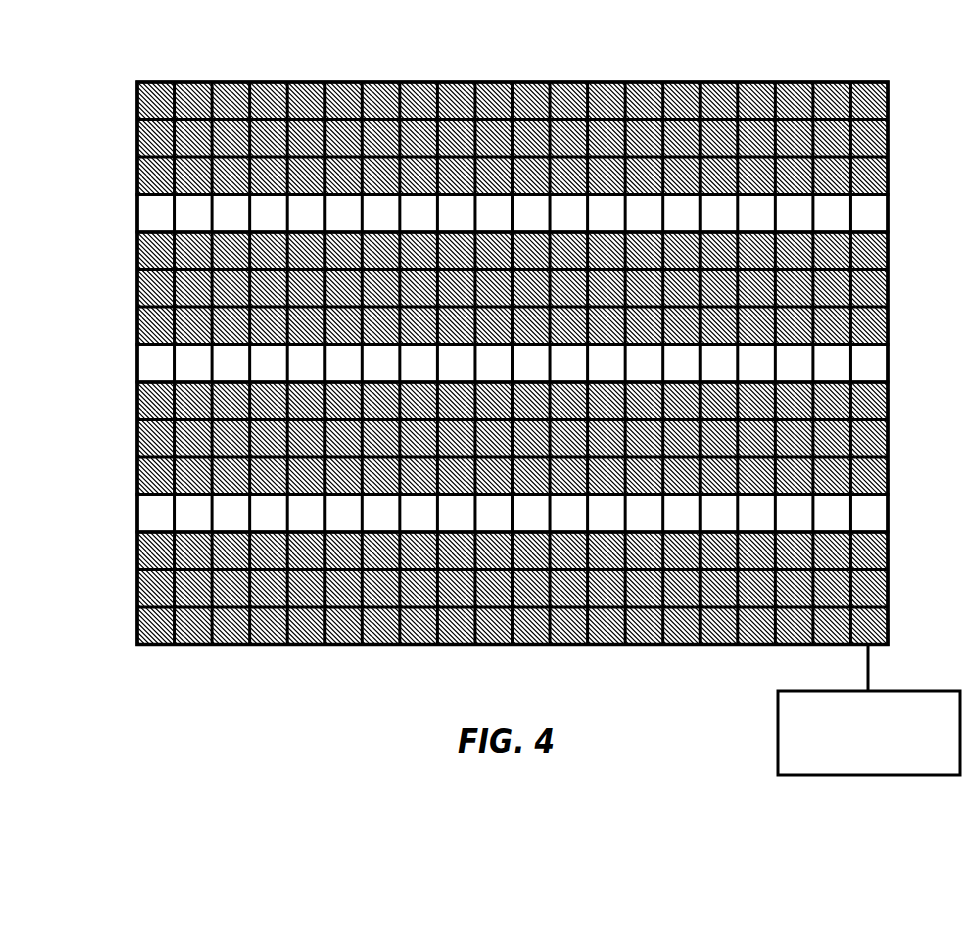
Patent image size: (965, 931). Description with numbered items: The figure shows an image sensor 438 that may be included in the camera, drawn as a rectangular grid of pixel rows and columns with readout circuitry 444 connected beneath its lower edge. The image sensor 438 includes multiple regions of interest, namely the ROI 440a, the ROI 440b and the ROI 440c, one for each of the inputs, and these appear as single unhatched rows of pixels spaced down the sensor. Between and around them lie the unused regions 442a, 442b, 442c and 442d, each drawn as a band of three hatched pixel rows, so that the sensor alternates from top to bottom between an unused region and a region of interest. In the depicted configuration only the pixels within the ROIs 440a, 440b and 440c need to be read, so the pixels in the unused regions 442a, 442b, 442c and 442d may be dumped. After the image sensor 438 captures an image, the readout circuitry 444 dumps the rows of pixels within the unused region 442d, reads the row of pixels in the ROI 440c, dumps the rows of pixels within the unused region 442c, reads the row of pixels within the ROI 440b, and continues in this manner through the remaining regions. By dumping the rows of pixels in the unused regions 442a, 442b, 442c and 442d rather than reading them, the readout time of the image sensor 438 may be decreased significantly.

The image sensor 438 is at (300, 81).
The unused region 442a is at (118, 82).
The unused region 442b is at (118, 232).
The unused region 442c is at (118, 382).
The unused region 442d is at (118, 532).
The ROI 440a is at (118, 194).
The ROI 440b is at (118, 344).
The ROI 440c is at (118, 494).
The readout circuitry 444 is at (869, 710).